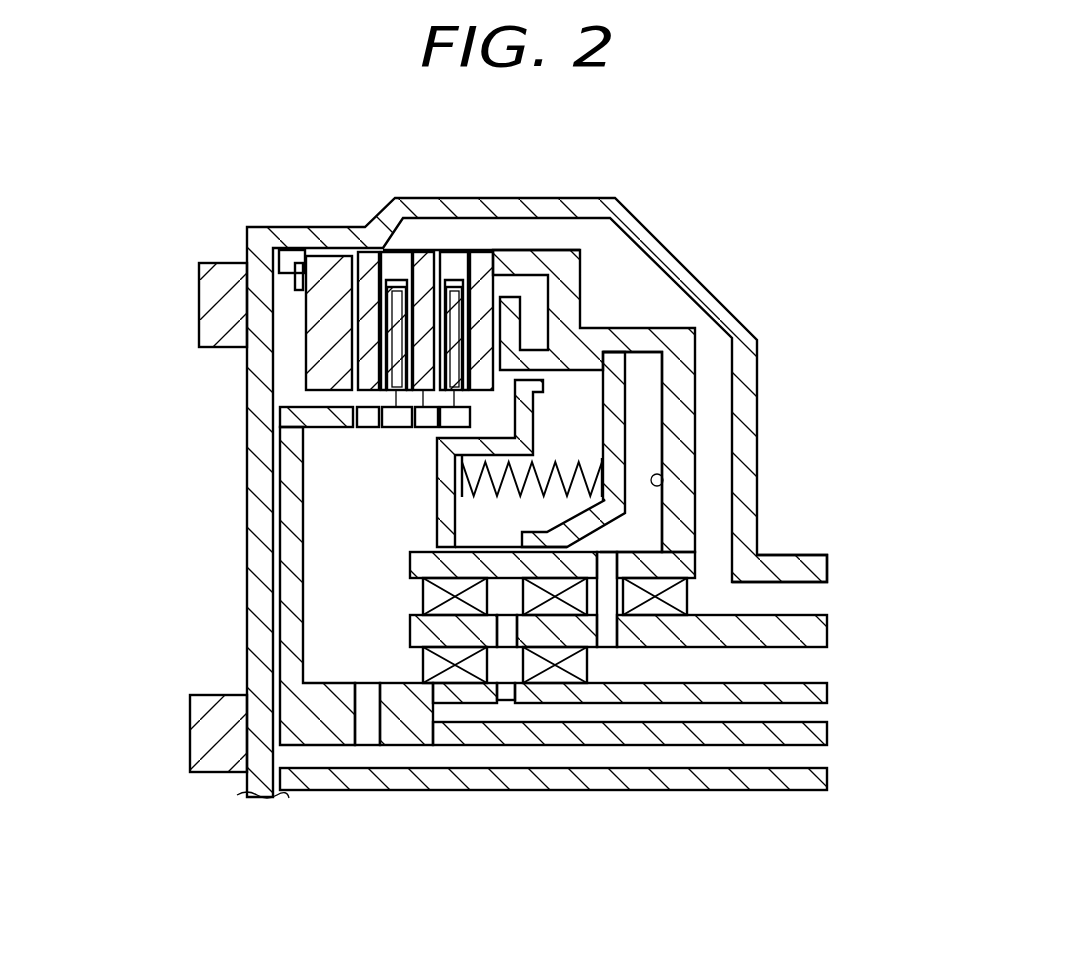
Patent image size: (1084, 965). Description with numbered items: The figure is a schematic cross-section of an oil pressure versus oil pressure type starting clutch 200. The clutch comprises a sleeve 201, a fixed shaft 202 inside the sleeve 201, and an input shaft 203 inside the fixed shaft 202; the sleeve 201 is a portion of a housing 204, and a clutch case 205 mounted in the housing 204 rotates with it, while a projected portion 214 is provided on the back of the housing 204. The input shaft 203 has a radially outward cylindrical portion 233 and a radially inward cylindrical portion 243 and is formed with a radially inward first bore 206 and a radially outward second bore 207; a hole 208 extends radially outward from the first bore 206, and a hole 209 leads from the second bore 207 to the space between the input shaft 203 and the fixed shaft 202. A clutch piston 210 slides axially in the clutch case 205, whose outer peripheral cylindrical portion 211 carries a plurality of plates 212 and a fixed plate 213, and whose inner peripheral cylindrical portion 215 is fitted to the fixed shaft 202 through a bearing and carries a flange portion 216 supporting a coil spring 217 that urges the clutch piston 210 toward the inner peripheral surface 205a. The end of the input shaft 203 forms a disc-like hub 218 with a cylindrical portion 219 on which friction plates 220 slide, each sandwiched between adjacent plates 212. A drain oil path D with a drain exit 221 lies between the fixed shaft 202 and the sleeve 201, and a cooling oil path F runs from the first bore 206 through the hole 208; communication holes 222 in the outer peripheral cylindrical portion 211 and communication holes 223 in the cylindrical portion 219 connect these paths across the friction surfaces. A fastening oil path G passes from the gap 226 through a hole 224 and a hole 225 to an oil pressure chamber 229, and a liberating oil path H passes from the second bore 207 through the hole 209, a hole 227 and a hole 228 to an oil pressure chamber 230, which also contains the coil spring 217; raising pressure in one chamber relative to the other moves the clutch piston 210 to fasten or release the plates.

The starting clutch 200 is at (693, 178).
The sleeve 201 is at (830, 563).
The fixed shaft 202 is at (832, 633).
The input shaft 203 is at (830, 693).
The housing 204 is at (658, 297).
The clutch case 205 is at (682, 348).
The inner peripheral surface of the clutch case 205a is at (663, 490).
The first bore 206 is at (822, 757).
The second bore 207 is at (823, 718).
The hole 208 is at (367, 728).
The hole 209 is at (508, 637).
The clutch piston 210 is at (620, 410).
The outer peripheral cylindrical portion 211 is at (563, 262).
The plates 212 is at (366, 256).
The fixed plate 213 is at (317, 360).
The projected portion 214 is at (205, 312).
The inner peripheral cylindrical portion 215 is at (422, 559).
The flange portion 216 is at (445, 510).
The coil spring 217 is at (445, 490).
The hub 218 is at (277, 560).
The cylindrical portion 219 is at (283, 436).
The friction plates 220 is at (310, 252).
The drain exit 221 is at (815, 598).
The communication holes 222 is at (392, 298).
The communication holes 223 is at (422, 427).
The hole 224 is at (605, 633).
The hole 225 is at (625, 583).
The gap 226 is at (817, 667).
The hole 227 is at (523, 648).
The hole 228 is at (463, 583).
The oil pressure chamber 229 is at (643, 515).
The oil pressure chamber 230 is at (575, 432).
The cylindrical portion 233 is at (737, 695).
The cylindrical portion 243 is at (785, 737).
The drain oil path D is at (700, 277).
The cooling oil path F is at (317, 633).
The clutch piston fastening oil path G is at (643, 534).
The clutch piston liberating oil path H is at (437, 533).